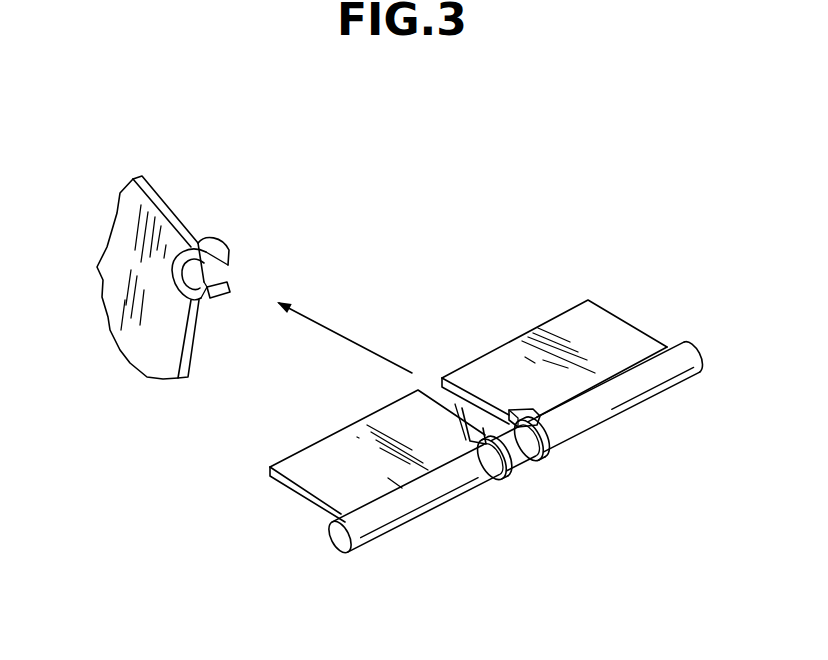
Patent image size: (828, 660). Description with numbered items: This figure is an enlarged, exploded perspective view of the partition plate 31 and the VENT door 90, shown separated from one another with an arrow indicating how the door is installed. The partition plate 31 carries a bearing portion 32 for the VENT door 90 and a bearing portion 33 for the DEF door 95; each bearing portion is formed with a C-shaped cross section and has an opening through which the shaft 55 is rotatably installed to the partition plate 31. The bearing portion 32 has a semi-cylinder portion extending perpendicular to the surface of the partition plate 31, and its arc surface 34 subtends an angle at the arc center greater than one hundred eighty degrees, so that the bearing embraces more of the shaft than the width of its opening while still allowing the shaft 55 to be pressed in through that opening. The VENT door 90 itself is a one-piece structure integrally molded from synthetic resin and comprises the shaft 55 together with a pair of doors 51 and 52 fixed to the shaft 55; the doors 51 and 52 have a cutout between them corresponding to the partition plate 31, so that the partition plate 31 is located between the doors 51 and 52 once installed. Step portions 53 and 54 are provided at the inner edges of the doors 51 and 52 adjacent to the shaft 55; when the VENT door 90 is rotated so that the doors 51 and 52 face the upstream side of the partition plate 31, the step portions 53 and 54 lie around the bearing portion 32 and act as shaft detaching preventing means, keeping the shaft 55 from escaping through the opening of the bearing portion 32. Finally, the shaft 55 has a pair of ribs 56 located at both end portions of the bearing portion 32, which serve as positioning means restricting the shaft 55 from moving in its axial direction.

The partition plate 31 is at (164, 192).
The bearing portion 32 is at (210, 246).
The bearing portion 33 is at (214, 268).
The arc surface 34 is at (221, 268).
The door 51 is at (331, 453).
The door 52 is at (613, 332).
The step portion 53 is at (469, 437).
The step portion 54 is at (520, 412).
The shaft 55 is at (340, 541).
The ribs 56 is at (531, 446).
The VENT door 90 is at (294, 496).
The DEF door 95 is at (445, 438).